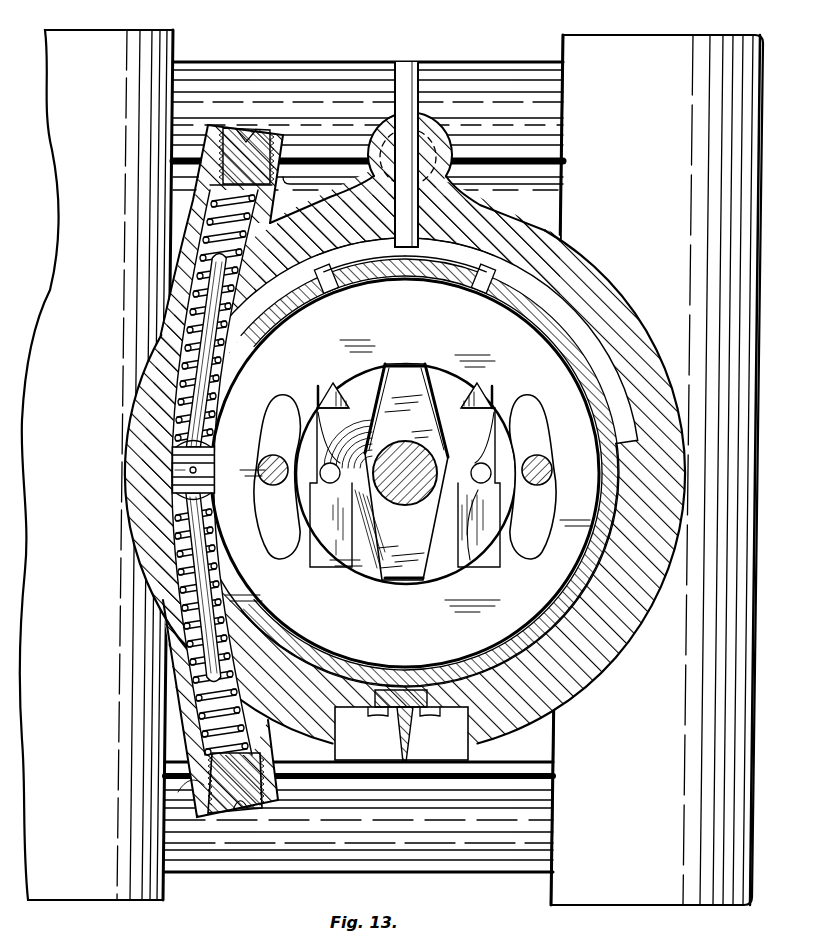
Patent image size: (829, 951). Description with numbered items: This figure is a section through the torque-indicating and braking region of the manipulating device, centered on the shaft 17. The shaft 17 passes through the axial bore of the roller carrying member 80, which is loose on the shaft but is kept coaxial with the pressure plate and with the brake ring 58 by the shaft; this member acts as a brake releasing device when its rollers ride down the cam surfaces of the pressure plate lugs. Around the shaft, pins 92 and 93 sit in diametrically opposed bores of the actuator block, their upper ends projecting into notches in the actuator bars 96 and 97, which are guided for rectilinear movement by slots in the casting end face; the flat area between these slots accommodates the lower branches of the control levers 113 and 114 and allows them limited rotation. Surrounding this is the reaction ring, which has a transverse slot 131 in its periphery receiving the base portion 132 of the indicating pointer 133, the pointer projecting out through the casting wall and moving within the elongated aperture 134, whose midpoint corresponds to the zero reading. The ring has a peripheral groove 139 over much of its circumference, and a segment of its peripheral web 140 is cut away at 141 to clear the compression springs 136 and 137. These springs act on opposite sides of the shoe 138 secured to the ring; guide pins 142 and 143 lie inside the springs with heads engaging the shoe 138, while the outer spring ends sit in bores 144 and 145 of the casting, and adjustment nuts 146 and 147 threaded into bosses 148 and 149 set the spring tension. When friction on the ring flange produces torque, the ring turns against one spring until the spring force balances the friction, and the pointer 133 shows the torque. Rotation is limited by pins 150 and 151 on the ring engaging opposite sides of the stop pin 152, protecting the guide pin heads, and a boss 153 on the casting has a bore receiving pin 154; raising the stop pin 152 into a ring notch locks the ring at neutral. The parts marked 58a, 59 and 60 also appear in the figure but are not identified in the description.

The shaft 17 is at (405, 505).
The brake ring 58 is at (418, 660).
The brake shoe slot 58a is at (282, 410).
The pin 59 is at (545, 468).
The pin 60 is at (266, 458).
The roller carrying member 80 is at (405, 380).
The pin 92 is at (331, 483).
The pin 93 is at (481, 483).
The actuator bar 96 is at (330, 544).
The actuator bar 97 is at (480, 545).
The control lever 113 is at (456, 410).
The control lever 114 is at (353, 408).
The transverse slot 131 is at (372, 702).
The base portion 132 is at (424, 706).
The indicating pointer 133 is at (410, 737).
The elongated aperture 134 is at (337, 733).
The compression spring 136 is at (185, 592).
The compression spring 137 is at (178, 313).
The shoe 138 is at (168, 445).
The peripheral groove 139 is at (578, 358).
The peripheral web 140 is at (537, 320).
The cut away portion 141 is at (258, 335).
The guide pin 142 is at (157, 563).
The guide pin 143 is at (190, 360).
The bore 144 is at (205, 710).
The bore 145 is at (200, 258).
The adjustment nut 146 is at (258, 812).
The adjustment nut 147 is at (263, 125).
The boss 148 is at (203, 808).
The boss 149 is at (200, 137).
The pin 150 is at (322, 285).
The pin 151 is at (483, 282).
The stop pin 152 is at (403, 108).
The boss 153 is at (372, 160).
The pin 154 is at (447, 160).